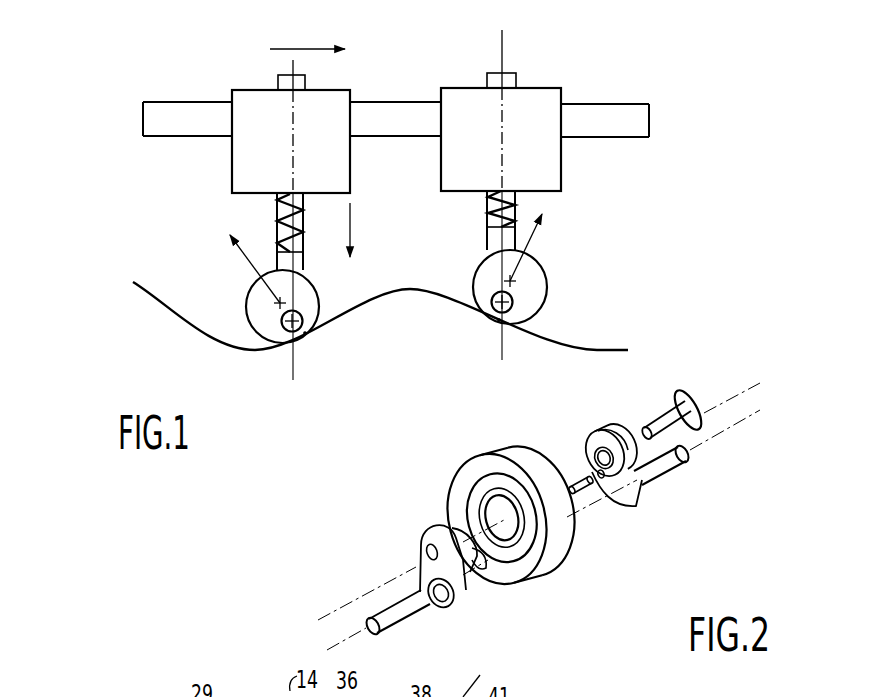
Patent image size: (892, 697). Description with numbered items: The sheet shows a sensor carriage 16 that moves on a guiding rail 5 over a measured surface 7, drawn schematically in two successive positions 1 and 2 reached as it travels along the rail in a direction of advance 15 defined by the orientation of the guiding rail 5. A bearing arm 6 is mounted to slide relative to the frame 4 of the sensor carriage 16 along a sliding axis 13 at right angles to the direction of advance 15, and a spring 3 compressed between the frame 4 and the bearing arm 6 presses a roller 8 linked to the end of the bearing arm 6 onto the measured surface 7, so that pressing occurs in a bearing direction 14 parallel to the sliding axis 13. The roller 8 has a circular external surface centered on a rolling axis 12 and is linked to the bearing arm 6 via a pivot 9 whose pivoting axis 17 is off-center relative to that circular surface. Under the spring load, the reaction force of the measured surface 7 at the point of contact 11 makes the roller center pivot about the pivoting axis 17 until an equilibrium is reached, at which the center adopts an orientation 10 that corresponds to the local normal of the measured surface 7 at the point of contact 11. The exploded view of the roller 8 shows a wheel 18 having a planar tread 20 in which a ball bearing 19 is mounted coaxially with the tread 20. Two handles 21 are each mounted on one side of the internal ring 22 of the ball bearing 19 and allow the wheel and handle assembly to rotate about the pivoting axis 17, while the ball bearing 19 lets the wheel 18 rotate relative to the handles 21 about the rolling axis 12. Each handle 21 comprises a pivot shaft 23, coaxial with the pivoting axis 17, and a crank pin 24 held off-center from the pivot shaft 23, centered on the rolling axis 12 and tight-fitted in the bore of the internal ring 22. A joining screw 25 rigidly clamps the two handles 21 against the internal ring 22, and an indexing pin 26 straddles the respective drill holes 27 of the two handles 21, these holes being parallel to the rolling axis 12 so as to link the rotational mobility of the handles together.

In FIG. 1, the first position 1 is at (247, 78).
In FIG. 1, the second position 2 is at (453, 77).
In FIG. 1, the spring 3 is at (277, 213).
In FIG. 1, the frame 4 is at (232, 88).
In FIG. 1, the guiding rail 5 is at (650, 125).
In FIG. 1, the bearing arm 6 is at (305, 235).
In FIG. 1, the measured surface 7 is at (603, 350).
In FIG. 1, the roller 8 is at (246, 294).
In FIG. 2, the roller 8 is at (448, 458).
In FIG. 1, the pivot 9 is at (307, 313).
In FIG. 1, the orientation 10 is at (240, 260).
In FIG. 1, the point of contact 11 is at (303, 335).
In FIG. 1, the rolling axis 12 is at (516, 282).
In FIG. 2, the rolling axis 12 is at (742, 393).
In FIG. 1, the sliding axis 13 is at (502, 47).
In FIG. 1, the bearing direction 14 is at (352, 230).
In FIG. 1, the direction of advance 15 is at (301, 47).
In FIG. 1, the sensor carriage 16 is at (348, 82).
In FIG. 2, the pivoting axis 17 is at (732, 430).
In FIG. 2, the wheel 18 is at (557, 547).
In FIG. 2, the ball bearing 19 is at (470, 502).
In FIG. 2, the planar tread 20 is at (497, 455).
In FIG. 2, the handles 21 is at (437, 613).
In FIG. 2, the internal ring 22 is at (515, 543).
In FIG. 2, the pivot shaft 23 is at (400, 610).
In FIG. 2, the crank pin 24 is at (475, 553).
In FIG. 2, the joining screw 25 is at (658, 420).
In FIG. 2, the indexing pin 26 is at (575, 487).
In FIG. 2, the drill holes 27 is at (598, 487).